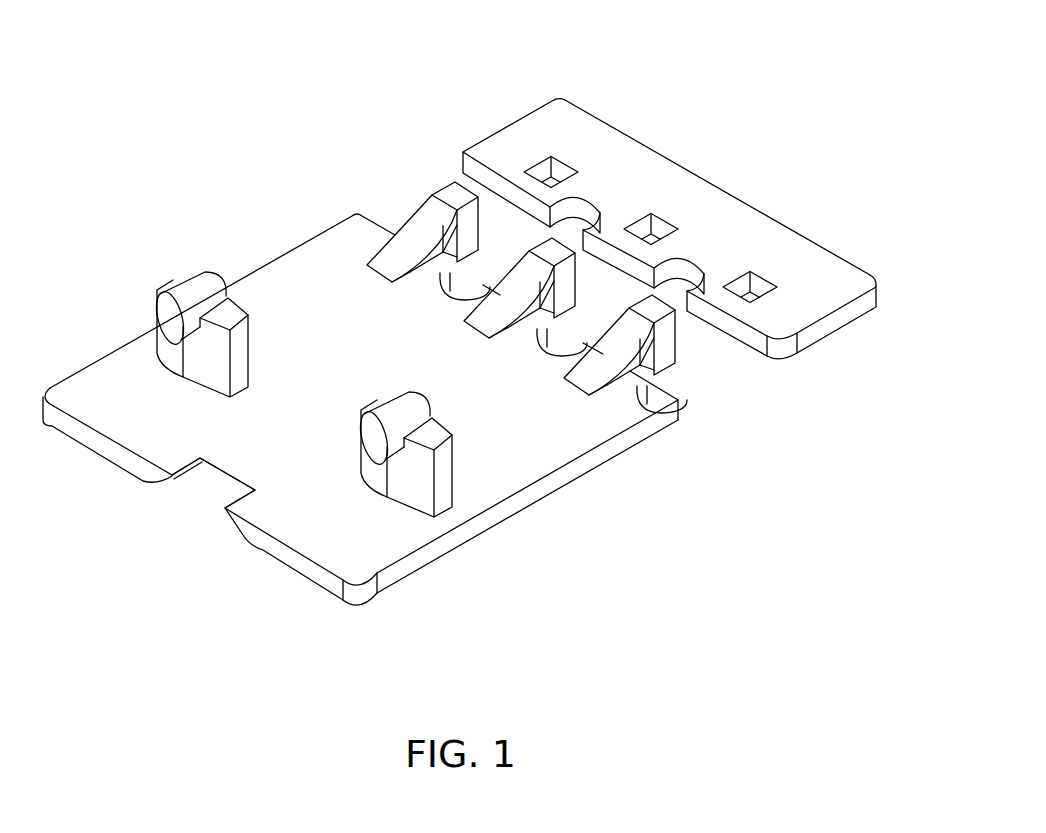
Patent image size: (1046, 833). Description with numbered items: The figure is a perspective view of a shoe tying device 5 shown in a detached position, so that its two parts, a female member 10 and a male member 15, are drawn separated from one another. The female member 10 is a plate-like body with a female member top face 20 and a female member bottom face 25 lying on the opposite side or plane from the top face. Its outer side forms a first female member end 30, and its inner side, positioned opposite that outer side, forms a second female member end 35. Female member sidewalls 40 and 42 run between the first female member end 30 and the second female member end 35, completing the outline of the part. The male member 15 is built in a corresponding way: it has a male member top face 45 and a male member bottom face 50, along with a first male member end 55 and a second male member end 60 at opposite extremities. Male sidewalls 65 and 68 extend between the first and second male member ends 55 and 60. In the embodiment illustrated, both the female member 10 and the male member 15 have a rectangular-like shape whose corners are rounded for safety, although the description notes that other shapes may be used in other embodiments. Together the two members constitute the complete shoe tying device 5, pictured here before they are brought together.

The shoe tying device 5 is at (204, 143).
The female member 10 is at (549, 98).
The male member 15 is at (114, 349).
The female member top face 20 is at (633, 150).
The female member bottom face 25 is at (813, 347).
The first female member end 30 is at (780, 217).
The second female member end 35 is at (753, 338).
The female member sidewall 40 is at (851, 318).
The female member sidewall 42 is at (493, 133).
The male member top face 45 is at (400, 544).
The male member bottom face 50 is at (466, 550).
The first male member end 55 is at (661, 436).
The second male member end 60 is at (297, 561).
The male sidewall 65 is at (240, 277).
The male sidewall 68 is at (552, 498).